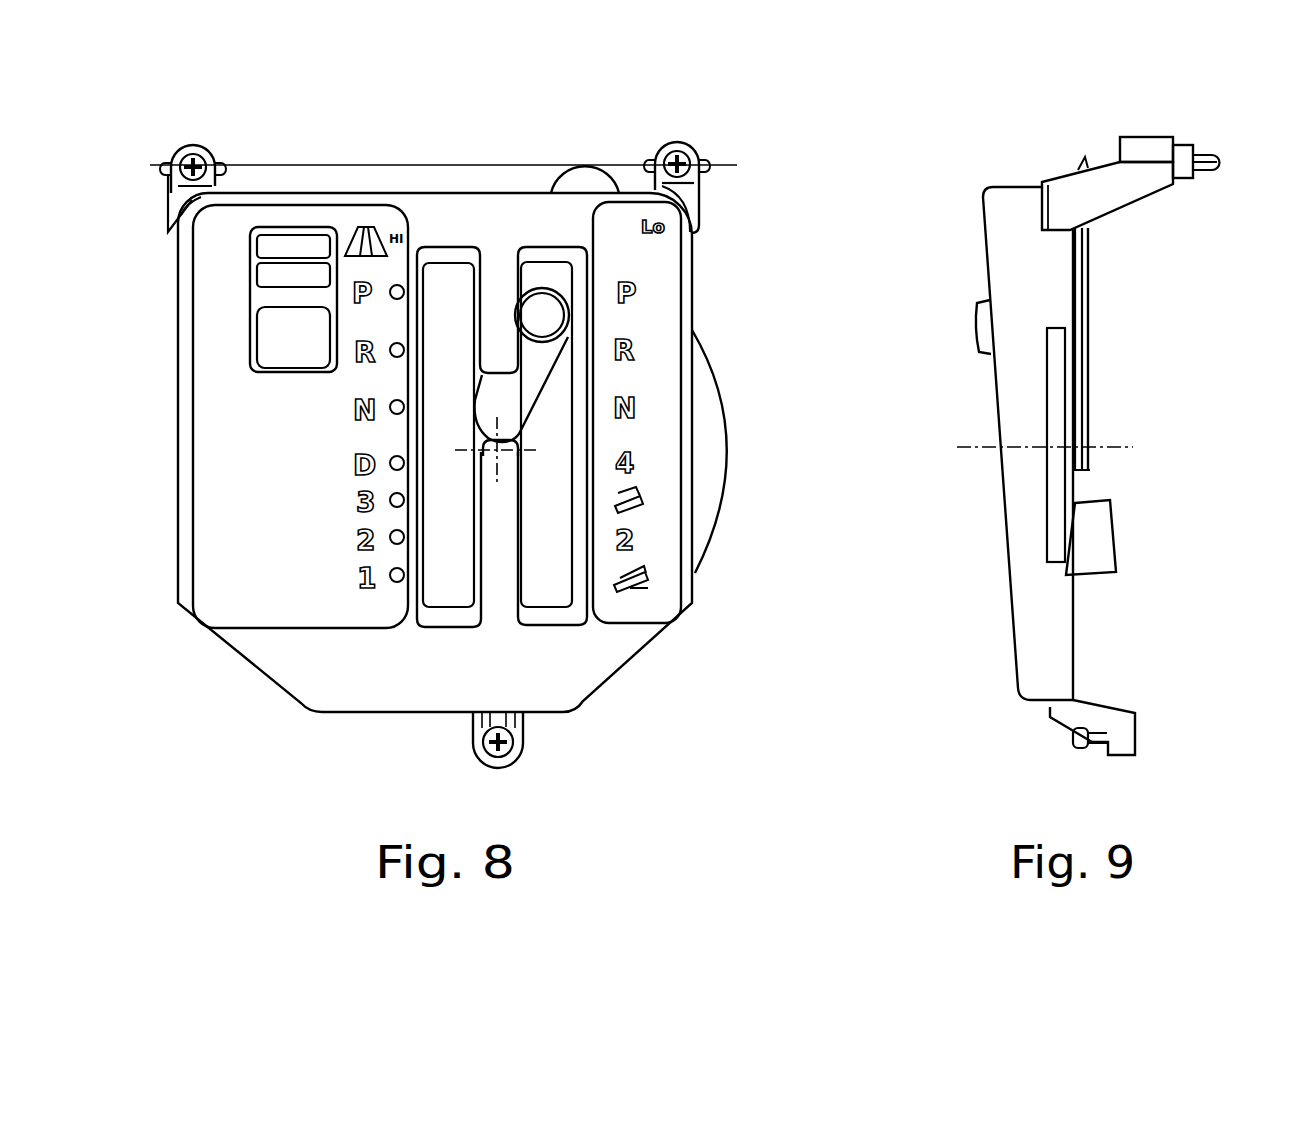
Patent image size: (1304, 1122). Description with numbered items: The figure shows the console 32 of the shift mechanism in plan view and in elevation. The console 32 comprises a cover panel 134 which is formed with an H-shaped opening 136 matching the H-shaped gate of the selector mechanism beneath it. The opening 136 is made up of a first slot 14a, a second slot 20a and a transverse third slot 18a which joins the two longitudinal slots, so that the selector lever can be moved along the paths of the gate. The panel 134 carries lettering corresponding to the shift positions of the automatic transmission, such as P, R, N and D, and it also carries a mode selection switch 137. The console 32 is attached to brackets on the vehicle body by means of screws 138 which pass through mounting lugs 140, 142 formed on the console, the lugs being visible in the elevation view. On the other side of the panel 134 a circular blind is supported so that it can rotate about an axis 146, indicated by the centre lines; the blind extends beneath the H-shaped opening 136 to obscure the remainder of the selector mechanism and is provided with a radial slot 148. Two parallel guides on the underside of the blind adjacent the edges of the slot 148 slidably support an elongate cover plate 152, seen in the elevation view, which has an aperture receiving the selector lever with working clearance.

In FIG. 8, the console 32 is at (267, 693).
In FIG. 8, the cover panel 134 is at (470, 200).
In FIG. 8, the H-shaped opening 136 is at (460, 583).
In FIG. 8, the mode selection switch 137 is at (262, 352).
In FIG. 9, the mode selection switch 137 is at (975, 318).
In FIG. 8, the screws 138 is at (212, 148).
In FIG. 9, the mounting lug 140 is at (1142, 182).
In FIG. 9, the mounting lug 142 is at (1132, 747).
In FIG. 8, the axis 146 is at (497, 452).
In FIG. 9, the axis 146 is at (988, 450).
In FIG. 8, the radial slot 148 is at (560, 357).
In FIG. 9, the cover plate 152 is at (1092, 342).
In FIG. 8, the first slot 14a is at (428, 427).
In FIG. 8, the transverse third slot 18a is at (503, 410).
In FIG. 8, the second slot 20a is at (562, 403).